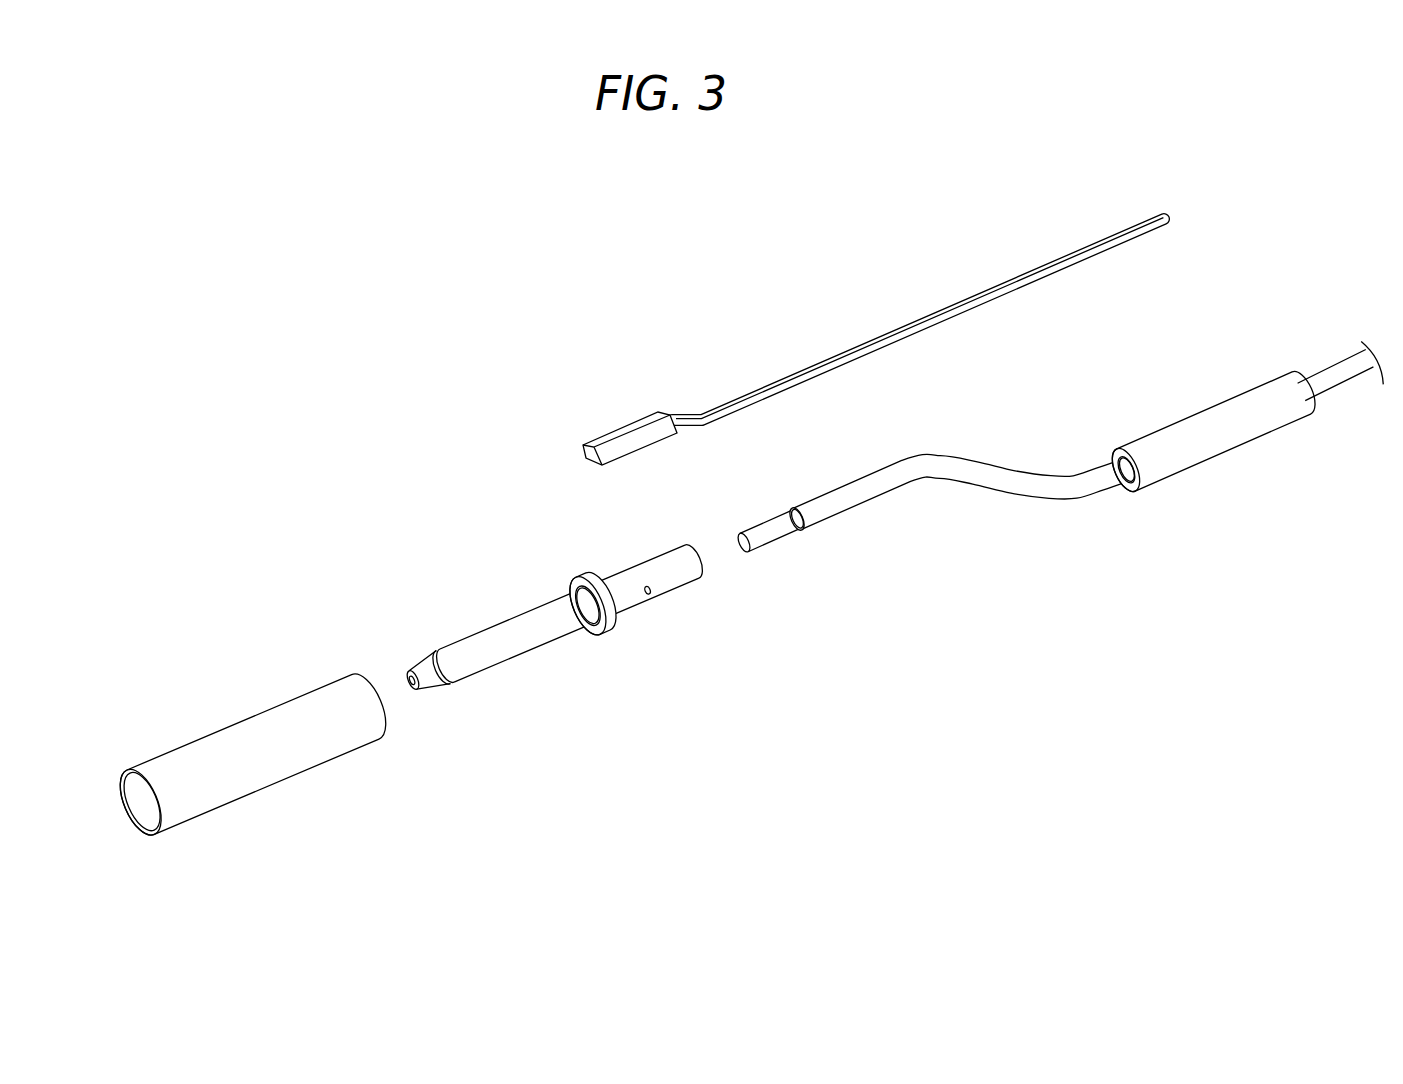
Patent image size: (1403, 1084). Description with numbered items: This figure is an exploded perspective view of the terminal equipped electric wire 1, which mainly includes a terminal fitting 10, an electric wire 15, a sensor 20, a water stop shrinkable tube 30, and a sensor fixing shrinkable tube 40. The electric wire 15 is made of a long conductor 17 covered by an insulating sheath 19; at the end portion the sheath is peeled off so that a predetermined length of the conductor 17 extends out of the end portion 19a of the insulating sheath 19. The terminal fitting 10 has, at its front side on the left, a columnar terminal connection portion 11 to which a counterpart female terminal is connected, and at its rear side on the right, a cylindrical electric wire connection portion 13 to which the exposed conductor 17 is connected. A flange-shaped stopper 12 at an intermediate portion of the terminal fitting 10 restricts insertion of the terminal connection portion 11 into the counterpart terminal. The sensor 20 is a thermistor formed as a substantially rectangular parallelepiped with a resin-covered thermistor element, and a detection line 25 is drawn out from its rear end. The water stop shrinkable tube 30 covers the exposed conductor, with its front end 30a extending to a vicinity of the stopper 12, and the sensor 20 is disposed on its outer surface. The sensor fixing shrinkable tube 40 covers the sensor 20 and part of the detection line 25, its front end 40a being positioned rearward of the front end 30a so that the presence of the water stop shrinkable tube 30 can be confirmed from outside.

The terminal equipped electric wire 1 is at (441, 338).
The terminal fitting 10 is at (554, 637).
The terminal connection portion 11 is at (498, 643).
The stopper 12 is at (592, 603).
The electric wire connection portion 13 is at (649, 580).
The electric wire 15 is at (907, 547).
The conductor 17 is at (775, 531).
The insulating sheath 19 is at (907, 531).
The end portion of the insulating sheath 19a is at (790, 520).
The sensor 20 is at (626, 426).
The detection line 25 is at (880, 332).
The water stop shrinkable tube 30 is at (1241, 460).
The front end of the water stop shrinkable tube 30a is at (1127, 469).
The sensor fixing shrinkable tube 40 is at (253, 776).
The front end of the sensor fixing shrinkable tube 40a is at (142, 801).